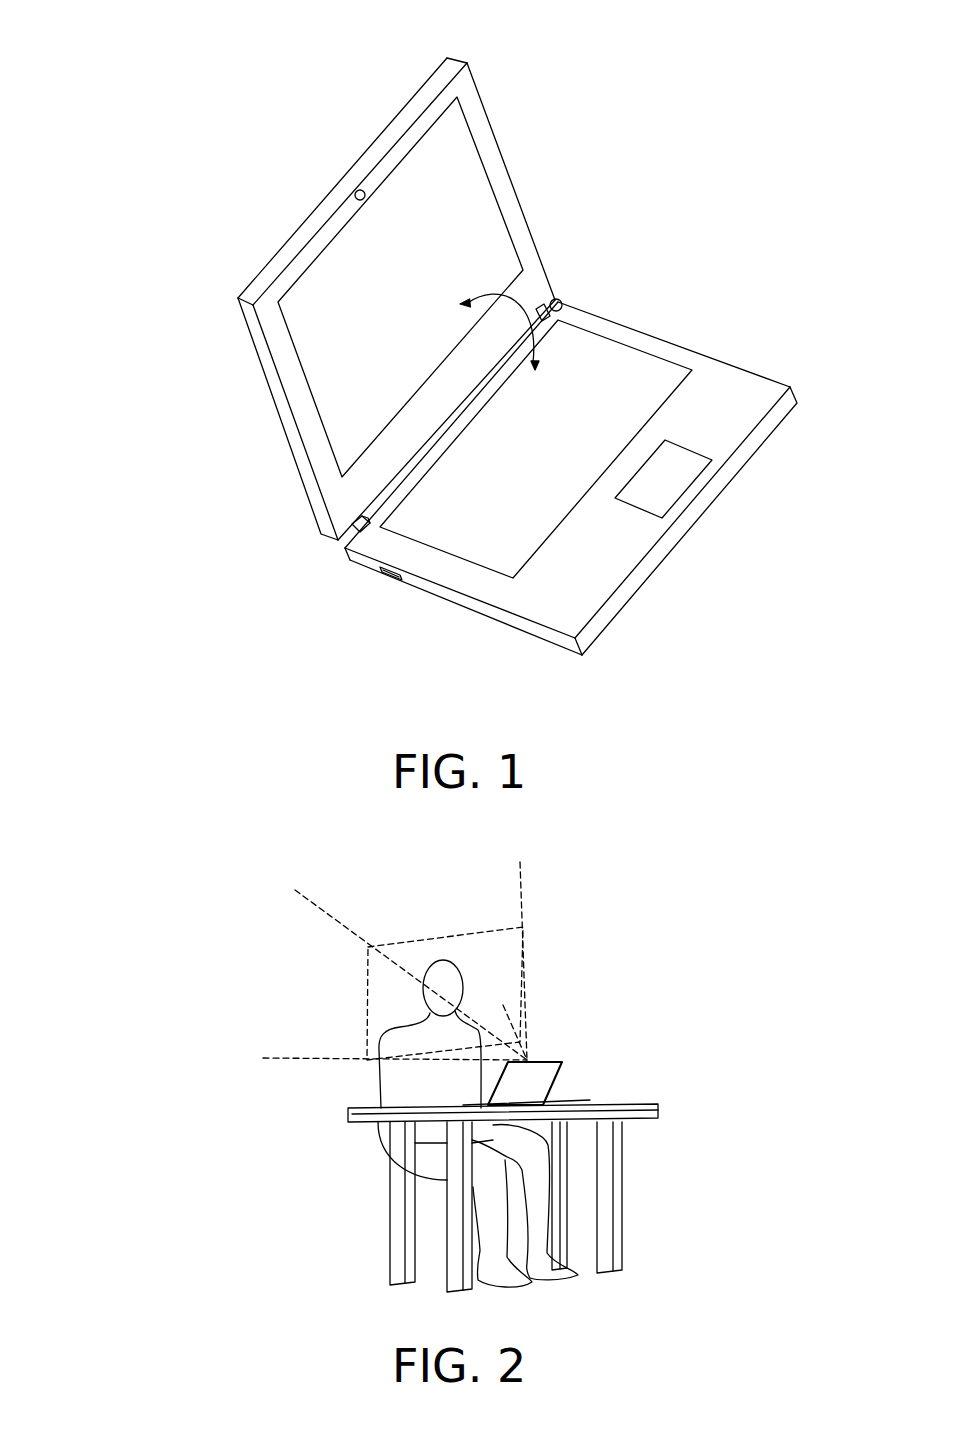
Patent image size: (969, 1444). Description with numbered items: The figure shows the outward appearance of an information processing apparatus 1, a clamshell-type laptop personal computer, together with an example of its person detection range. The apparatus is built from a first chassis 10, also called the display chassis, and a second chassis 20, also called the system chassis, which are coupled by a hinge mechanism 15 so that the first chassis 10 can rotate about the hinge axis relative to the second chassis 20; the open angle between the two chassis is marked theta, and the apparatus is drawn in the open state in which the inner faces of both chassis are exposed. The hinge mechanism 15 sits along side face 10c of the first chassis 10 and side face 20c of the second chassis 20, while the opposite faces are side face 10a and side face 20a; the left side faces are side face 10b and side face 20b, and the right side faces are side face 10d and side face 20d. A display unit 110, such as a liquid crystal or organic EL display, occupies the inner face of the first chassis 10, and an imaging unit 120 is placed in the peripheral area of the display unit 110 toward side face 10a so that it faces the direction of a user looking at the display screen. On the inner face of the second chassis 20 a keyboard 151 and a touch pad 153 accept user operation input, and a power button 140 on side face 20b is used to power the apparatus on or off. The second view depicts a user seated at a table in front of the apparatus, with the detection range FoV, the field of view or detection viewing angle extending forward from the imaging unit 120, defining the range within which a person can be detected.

In FIG. 1, the information processing apparatus 1 is at (98, 80).
In FIG. 2, the information processing apparatus 1 is at (555, 1058).
In FIG. 1, the first chassis 10 is at (222, 469).
In FIG. 1, the side face 10a is at (294, 246).
In FIG. 1, the side face 10b is at (272, 382).
In FIG. 1, the side face 10c is at (560, 298).
In FIG. 1, the side face 10d is at (496, 137).
In FIG. 1, the hinge mechanism 15 is at (377, 507).
In FIG. 1, the second chassis 20 is at (675, 612).
In FIG. 1, the side face 20a is at (782, 413).
In FIG. 1, the side face 20b is at (505, 618).
In FIG. 1, the side face 20c is at (343, 553).
In FIG. 1, the side face 20d is at (762, 377).
In FIG. 1, the display unit 110 is at (496, 243).
In FIG. 1, the imaging unit 120 is at (360, 188).
In FIG. 1, the power button 140 is at (388, 575).
In FIG. 1, the keyboard 151 is at (637, 377).
In FIG. 1, the touch pad 153 is at (680, 483).
In FIG. 2, the detection range FoV is at (528, 997).